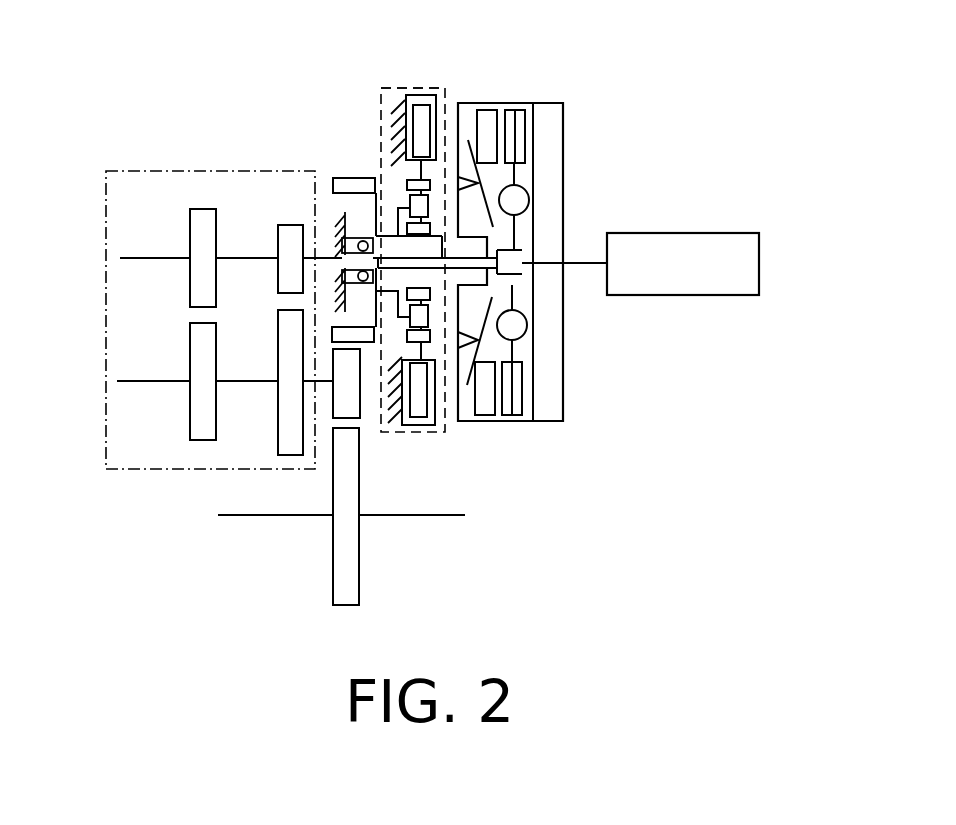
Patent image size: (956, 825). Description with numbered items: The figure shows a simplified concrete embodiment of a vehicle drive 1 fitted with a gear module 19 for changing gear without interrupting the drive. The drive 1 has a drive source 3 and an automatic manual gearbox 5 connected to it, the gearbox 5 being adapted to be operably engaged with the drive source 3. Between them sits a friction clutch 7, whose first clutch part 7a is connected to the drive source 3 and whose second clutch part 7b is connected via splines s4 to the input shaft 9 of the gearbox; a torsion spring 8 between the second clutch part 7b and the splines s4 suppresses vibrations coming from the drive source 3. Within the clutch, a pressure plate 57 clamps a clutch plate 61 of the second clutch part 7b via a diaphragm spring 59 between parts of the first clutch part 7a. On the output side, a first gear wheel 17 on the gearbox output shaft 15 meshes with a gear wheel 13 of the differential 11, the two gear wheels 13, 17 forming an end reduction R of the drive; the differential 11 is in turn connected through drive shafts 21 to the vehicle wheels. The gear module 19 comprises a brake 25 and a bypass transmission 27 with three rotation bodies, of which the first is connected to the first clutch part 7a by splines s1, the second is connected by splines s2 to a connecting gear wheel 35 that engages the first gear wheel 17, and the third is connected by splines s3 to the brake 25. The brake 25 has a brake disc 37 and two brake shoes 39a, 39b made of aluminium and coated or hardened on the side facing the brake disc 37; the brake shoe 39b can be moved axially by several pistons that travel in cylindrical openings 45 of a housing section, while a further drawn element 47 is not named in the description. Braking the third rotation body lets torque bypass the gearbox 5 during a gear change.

The drive 1 is at (138, 543).
The drive source 3 is at (723, 231).
The automatic manual gearbox 5 is at (150, 170).
The friction clutch 7 is at (529, 100).
The first clutch part 7a is at (564, 393).
The second clutch part 7b is at (523, 412).
The torsion spring 8 is at (516, 327).
The input shaft 9 is at (130, 257).
The differential 11 is at (360, 603).
The gear wheel 13 is at (342, 567).
The output shaft 15 is at (130, 382).
The first gear wheel 17 is at (345, 407).
The gear module 19 is at (439, 87).
The drive shafts 21 is at (262, 518).
The brake 25 is at (402, 90).
The bypass transmission 27 is at (394, 193).
The connecting gear wheel 35 is at (375, 216).
The brake disc 37 is at (412, 418).
The brake shoe 39a is at (403, 123).
The brake shoe 39b is at (434, 122).
The cylindrical openings 45 is at (488, 285).
The planet gear 47 is at (478, 350).
The pressure plate 57 is at (456, 251).
The diaphragm spring 59 is at (332, 292).
The clutch plate 61 is at (334, 274).
The end reduction R is at (333, 429).
The splines s1 is at (392, 235).
The splines s2 is at (374, 217).
The splines s3 is at (406, 176).
The splines s4 is at (529, 247).